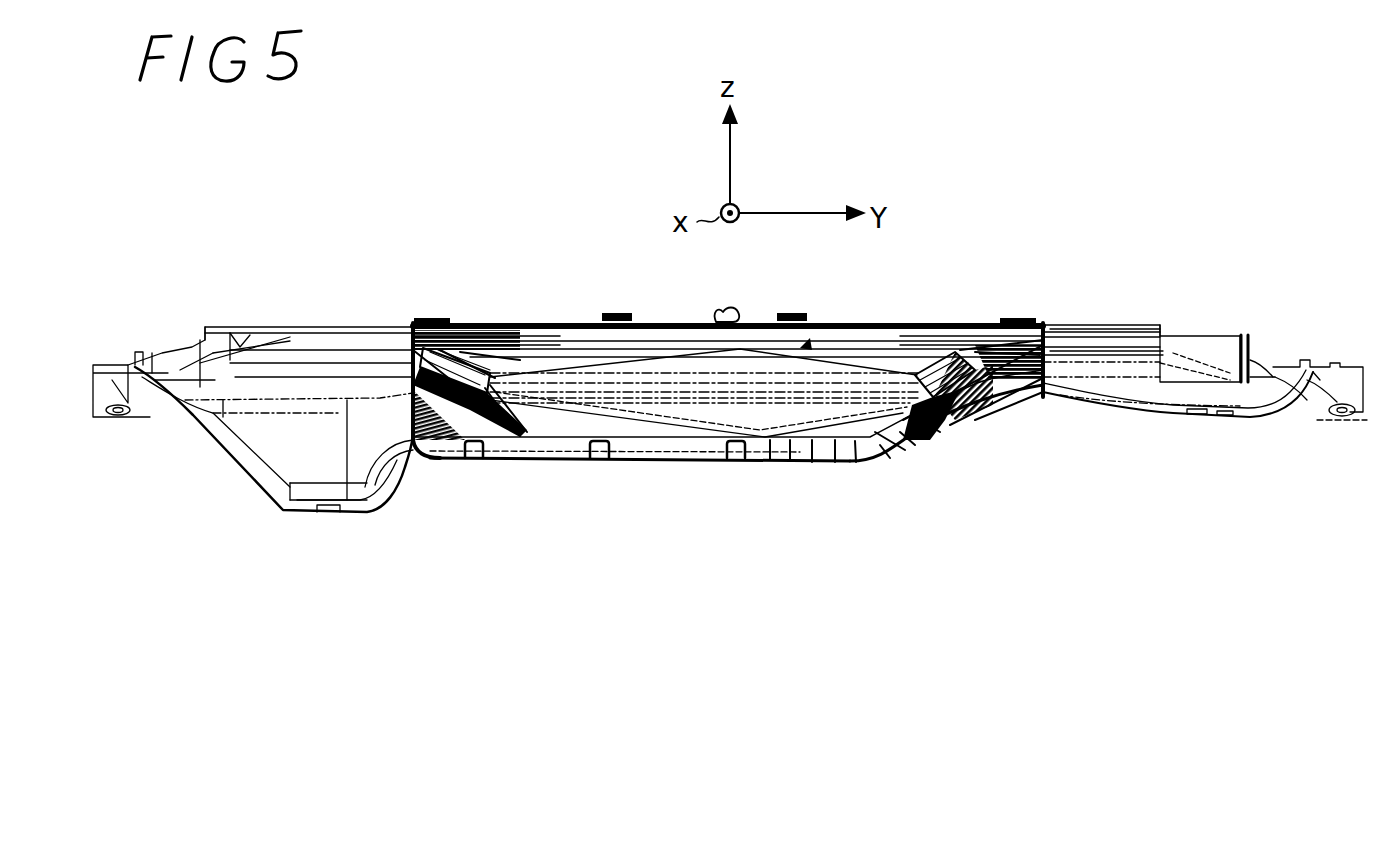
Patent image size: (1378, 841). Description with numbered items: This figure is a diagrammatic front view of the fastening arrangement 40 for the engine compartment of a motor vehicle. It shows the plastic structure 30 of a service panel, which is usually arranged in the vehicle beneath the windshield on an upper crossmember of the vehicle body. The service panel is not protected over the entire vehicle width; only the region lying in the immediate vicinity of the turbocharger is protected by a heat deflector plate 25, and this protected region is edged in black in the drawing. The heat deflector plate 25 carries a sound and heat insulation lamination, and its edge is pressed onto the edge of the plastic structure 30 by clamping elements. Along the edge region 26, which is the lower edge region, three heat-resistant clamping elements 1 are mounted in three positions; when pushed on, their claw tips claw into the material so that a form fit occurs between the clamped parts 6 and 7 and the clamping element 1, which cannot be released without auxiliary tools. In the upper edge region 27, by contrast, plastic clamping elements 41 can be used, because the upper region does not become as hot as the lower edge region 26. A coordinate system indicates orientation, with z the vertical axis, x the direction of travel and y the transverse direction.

The fastening arrangement 40 is at (703, 417).
The plastic structure 30 is at (341, 348).
The plastic clamping elements 41 is at (432, 325).
The part 6 is at (540, 338).
The upper edge region 27 is at (668, 320).
The heat deflector plate 25 is at (928, 338).
The part 7 is at (1254, 327).
The clamping element 1 is at (472, 460).
The lower edge region 26 is at (668, 465).